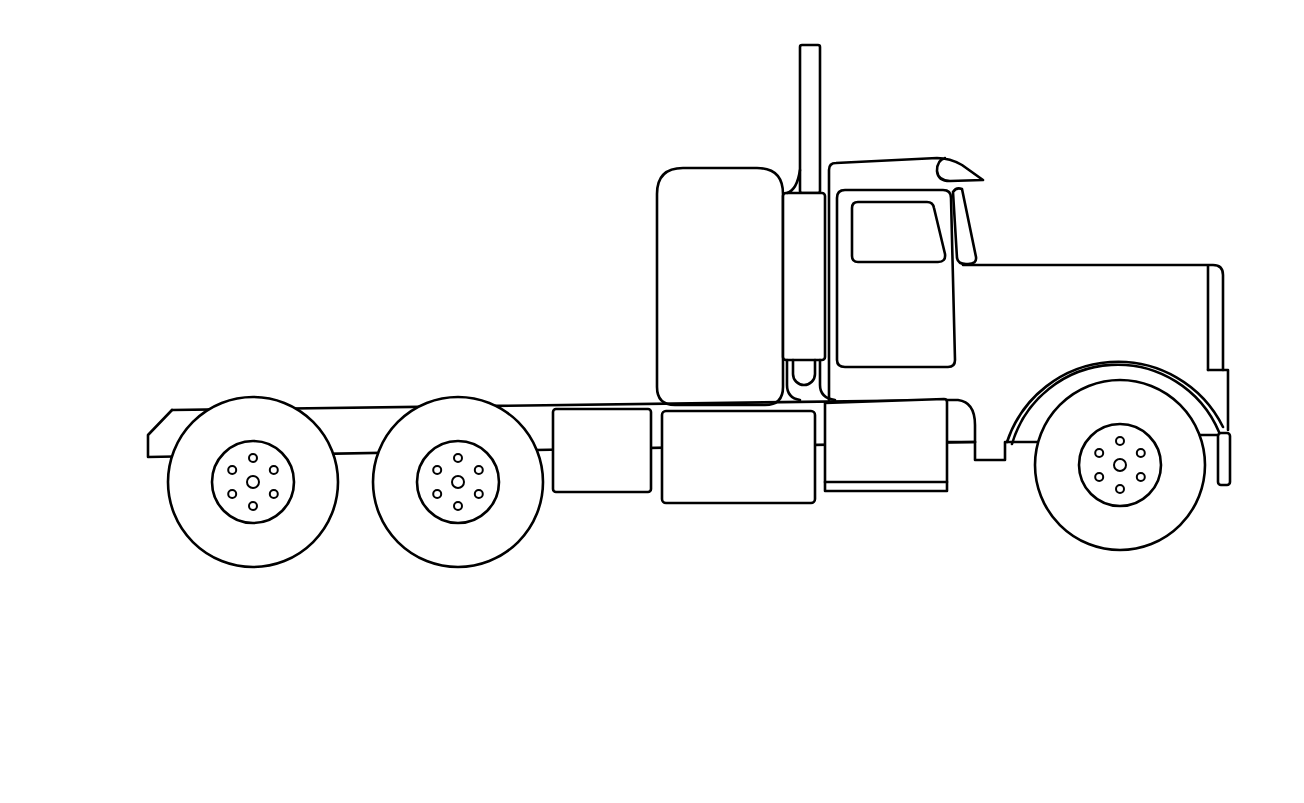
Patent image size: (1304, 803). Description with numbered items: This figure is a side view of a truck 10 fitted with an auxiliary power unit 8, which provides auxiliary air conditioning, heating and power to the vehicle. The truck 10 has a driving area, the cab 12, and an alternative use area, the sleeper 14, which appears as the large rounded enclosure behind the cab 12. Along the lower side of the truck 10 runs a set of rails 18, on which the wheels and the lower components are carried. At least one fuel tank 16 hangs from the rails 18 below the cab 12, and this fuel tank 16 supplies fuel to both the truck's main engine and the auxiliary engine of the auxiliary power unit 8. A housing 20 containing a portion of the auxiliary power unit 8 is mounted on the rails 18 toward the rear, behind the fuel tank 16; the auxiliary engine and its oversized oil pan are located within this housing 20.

The auxiliary power unit 8 is at (610, 353).
The truck 10 is at (623, 118).
The cab 12 is at (902, 172).
The sleeper 14 is at (690, 208).
The fuel tank 16 is at (770, 492).
The rails 18 is at (515, 405).
The housing 20 is at (602, 480).